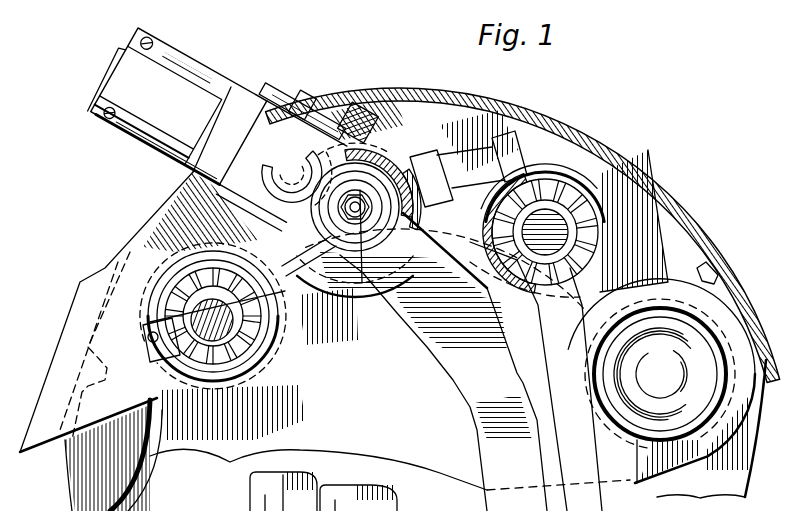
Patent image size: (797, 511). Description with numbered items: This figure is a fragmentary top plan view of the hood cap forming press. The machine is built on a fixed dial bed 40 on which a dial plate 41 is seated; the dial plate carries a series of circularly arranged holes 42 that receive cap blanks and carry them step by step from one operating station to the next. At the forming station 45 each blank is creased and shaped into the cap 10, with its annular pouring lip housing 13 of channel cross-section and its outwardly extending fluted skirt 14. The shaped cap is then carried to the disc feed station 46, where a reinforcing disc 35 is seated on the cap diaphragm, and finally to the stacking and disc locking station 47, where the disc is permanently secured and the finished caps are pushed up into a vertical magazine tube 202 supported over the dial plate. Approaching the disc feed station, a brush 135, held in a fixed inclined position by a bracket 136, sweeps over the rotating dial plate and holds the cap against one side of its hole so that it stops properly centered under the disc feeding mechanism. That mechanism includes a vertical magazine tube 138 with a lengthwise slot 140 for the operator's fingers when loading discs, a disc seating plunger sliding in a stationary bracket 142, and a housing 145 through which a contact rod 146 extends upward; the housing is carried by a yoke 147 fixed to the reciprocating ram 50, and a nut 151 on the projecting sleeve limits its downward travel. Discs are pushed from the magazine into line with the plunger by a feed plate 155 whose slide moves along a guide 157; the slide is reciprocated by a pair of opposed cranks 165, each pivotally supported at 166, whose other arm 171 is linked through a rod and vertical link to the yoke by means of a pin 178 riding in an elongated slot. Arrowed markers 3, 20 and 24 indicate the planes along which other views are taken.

The section line 3- 3 is at (447, 437).
The cap 10 is at (575, 168).
The annular pouring lip housing 13 is at (590, 232).
The fluted skirt 14 is at (585, 216).
The section line 20- 20 is at (80, 75).
The bracket plate 24 is at (57, 252).
The disc 35 is at (258, 400).
The dial bed 40 is at (700, 234).
The dial plate 41 is at (458, 107).
The holes 42 is at (580, 198).
The forming station 45 is at (668, 283).
The disc feed station 46 is at (381, 110).
The stacking and disc locking station 47 is at (316, 329).
The ram 50 is at (693, 312).
The brush 135 is at (515, 140).
The bracket 136 is at (458, 168).
The magazine tube 138 is at (272, 158).
The slot 140 is at (265, 166).
The stationary bracket 142 is at (378, 262).
The housing 145 is at (370, 180).
The contact rod 146 is at (381, 258).
The yoke 147 is at (440, 363).
The nut 151 is at (362, 180).
The feed plate 155 is at (235, 103).
The guide 157 is at (185, 46).
The cranks 165 is at (284, 82).
The pivot 166 is at (165, 230).
The arm 171 is at (310, 112).
The pin 178 is at (318, 480).
The magazine tube 202 is at (272, 392).